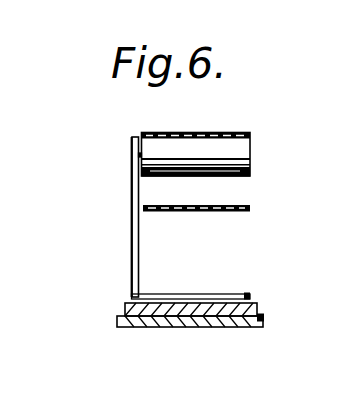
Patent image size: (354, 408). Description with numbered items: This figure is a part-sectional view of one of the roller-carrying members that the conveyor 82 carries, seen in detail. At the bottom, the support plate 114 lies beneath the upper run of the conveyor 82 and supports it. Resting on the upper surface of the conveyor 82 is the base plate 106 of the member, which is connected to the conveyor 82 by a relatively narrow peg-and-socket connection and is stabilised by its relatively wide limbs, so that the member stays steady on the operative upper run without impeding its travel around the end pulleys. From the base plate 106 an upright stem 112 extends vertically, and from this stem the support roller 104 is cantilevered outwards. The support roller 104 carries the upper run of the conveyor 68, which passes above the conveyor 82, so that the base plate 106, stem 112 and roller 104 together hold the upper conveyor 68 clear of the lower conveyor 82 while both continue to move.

The conveyor 68 is at (208, 133).
The conveyor 82 is at (262, 304).
The support roller 104 is at (250, 156).
The base plate 106 is at (244, 297).
The upright stem 112 is at (132, 209).
The support plate 114 is at (265, 319).